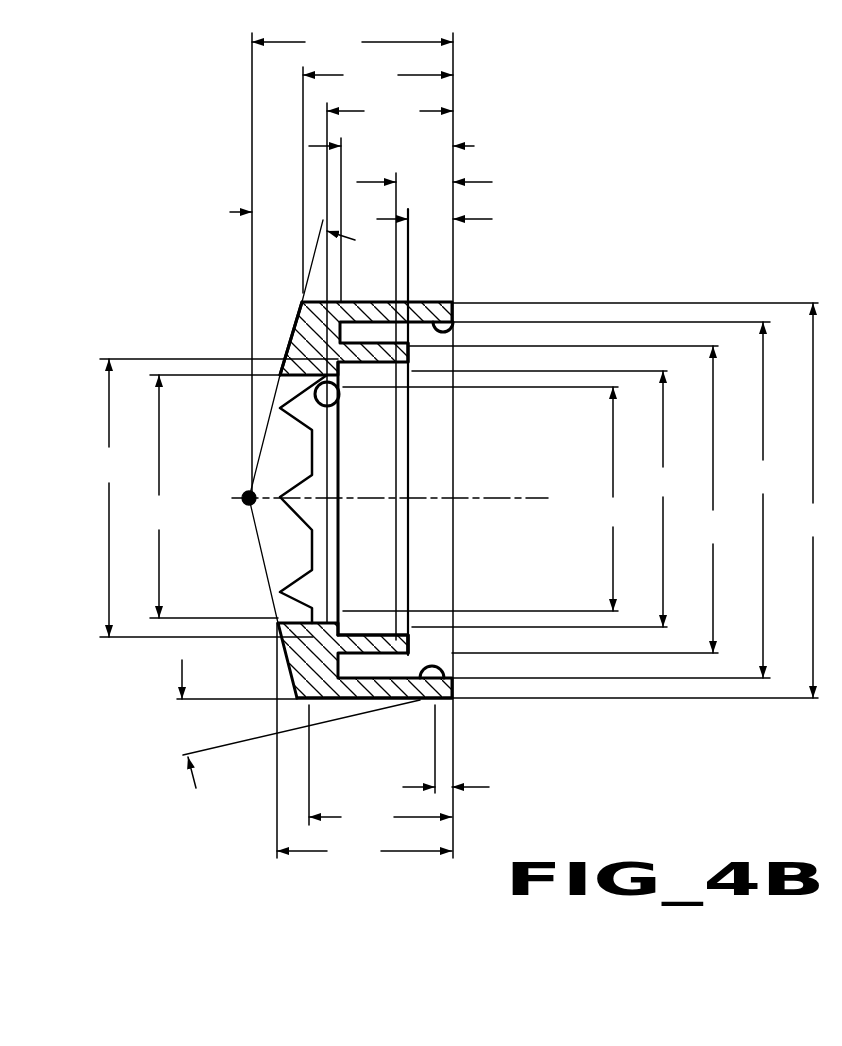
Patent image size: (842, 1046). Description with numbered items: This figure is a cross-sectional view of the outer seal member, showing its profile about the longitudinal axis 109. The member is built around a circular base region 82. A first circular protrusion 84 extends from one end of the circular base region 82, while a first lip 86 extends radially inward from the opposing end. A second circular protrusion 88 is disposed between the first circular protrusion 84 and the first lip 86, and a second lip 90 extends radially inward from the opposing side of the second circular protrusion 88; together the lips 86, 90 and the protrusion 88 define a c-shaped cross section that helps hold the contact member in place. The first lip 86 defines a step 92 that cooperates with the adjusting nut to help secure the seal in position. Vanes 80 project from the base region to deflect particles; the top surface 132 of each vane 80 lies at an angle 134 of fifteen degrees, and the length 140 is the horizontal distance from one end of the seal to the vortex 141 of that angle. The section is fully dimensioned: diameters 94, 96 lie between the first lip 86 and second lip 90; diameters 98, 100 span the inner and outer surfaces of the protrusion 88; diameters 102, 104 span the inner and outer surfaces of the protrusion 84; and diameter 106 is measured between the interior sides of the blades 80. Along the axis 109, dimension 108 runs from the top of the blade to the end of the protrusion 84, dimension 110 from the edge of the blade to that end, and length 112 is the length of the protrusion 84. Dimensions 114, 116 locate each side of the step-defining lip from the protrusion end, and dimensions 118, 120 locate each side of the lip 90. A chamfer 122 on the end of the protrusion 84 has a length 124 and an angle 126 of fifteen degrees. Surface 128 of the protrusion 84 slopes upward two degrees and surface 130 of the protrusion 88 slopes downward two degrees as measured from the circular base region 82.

The vane 80 is at (300, 318).
The circular base region 82 is at (325, 683).
The first circular protrusion 84 is at (430, 302).
The first lip 86 is at (330, 610).
The second circular protrusion 88 is at (362, 640).
The second lip 90 is at (410, 365).
The step 92 is at (326, 395).
The diameter 94 is at (486, 499).
The diameter 96 is at (546, 499).
The diameter 98 is at (210, 498).
The diameter 100 is at (574, 499).
The diameter 102 is at (621, 500).
The diameter 104 is at (647, 500).
The diameter 106 is at (206, 496).
The dimension 108 is at (364, 744).
The longitudinal axis 109 is at (540, 498).
The dimension 110 is at (378, 176).
The length 112 is at (380, 768).
The dimension 114 is at (390, 359).
The dimension 116 is at (391, 216).
The dimension 118 is at (452, 403).
The dimension 120 is at (462, 219).
The chamfer 122 is at (445, 700).
The length 124 is at (473, 753).
The angle 126 is at (285, 724).
The surface 128 is at (455, 327).
The surface 130 is at (368, 343).
The top surface 132 is at (291, 340).
The angle 134 is at (292, 222).
The length 140 is at (352, 442).
The vortex 141 is at (245, 502).